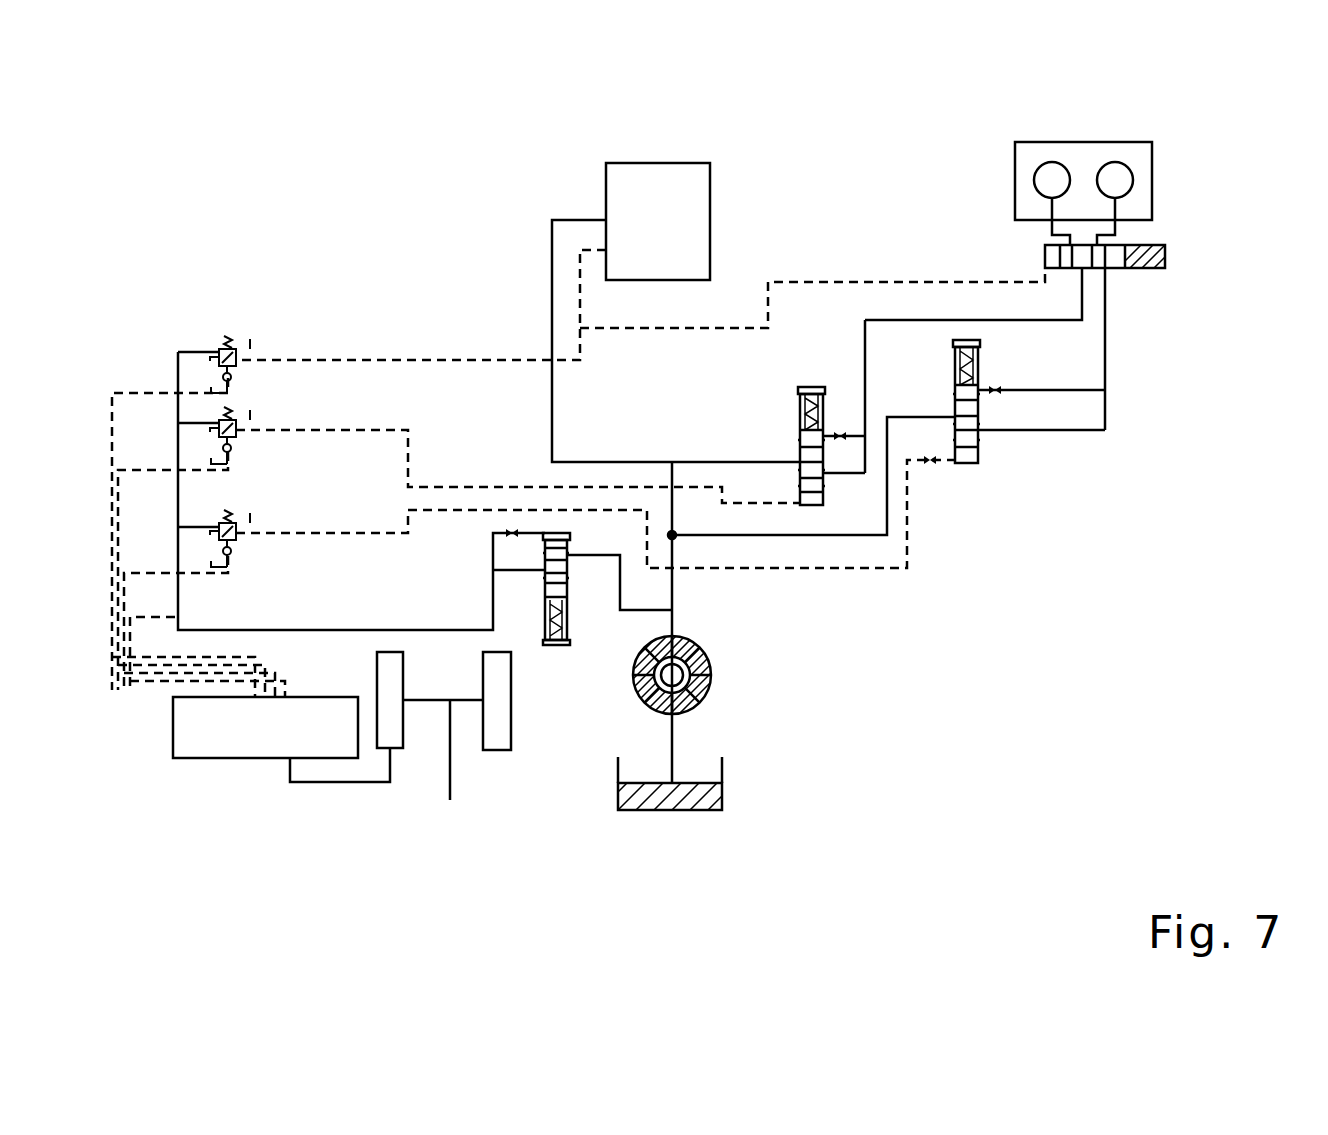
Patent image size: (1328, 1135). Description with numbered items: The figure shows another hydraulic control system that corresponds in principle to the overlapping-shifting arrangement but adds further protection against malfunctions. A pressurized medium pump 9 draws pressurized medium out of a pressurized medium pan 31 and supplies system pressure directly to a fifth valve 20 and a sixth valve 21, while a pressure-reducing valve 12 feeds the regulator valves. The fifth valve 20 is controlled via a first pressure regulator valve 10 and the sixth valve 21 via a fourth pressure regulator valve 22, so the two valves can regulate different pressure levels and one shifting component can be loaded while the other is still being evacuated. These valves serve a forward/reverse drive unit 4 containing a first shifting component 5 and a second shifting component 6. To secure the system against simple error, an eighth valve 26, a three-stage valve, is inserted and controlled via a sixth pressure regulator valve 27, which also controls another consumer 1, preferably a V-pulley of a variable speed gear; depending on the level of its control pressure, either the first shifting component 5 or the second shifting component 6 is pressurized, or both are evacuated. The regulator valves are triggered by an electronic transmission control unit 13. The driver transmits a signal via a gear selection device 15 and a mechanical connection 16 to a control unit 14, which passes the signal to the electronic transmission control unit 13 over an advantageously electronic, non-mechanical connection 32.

The consumer 1 is at (658, 210).
The forward/reverse drive unit 4 is at (1143, 200).
The first shifting component 5 is at (1050, 180).
The second shifting component 6 is at (1115, 180).
The pressurized medium pump 9 is at (710, 690).
The first pressure regulator valve 10 is at (235, 420).
The pressure-reducing valve 12 is at (563, 643).
The electronic transmission control unit 13 is at (208, 740).
The control unit 14 is at (395, 728).
The gear selection device 15 is at (502, 690).
The mechanical connection 16 is at (450, 800).
The fifth valve 20 is at (805, 423).
The sixth valve 21 is at (968, 390).
The fourth pressure regulator valve 22 is at (232, 530).
The eighth valve 26 is at (1167, 262).
The sixth pressure regulator valve 27 is at (232, 345).
The pressurized medium pan 31 is at (677, 800).
The non-mechanical connection 32 is at (318, 783).